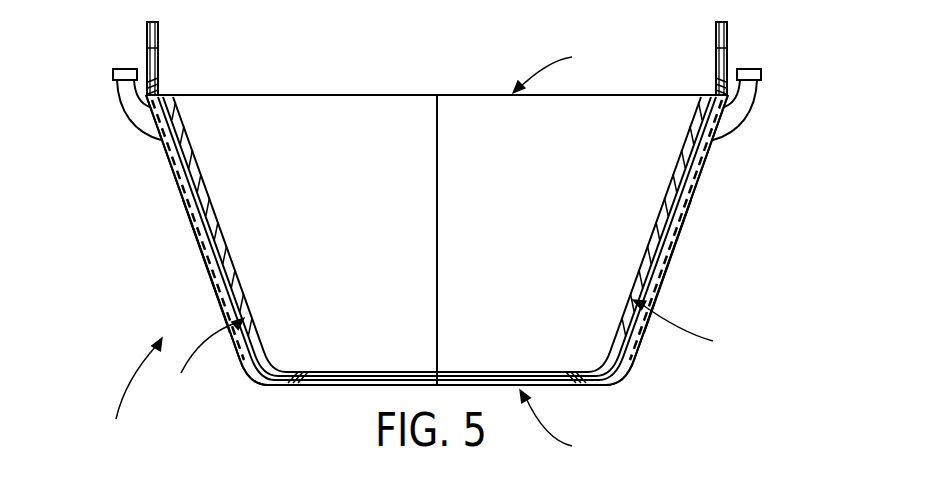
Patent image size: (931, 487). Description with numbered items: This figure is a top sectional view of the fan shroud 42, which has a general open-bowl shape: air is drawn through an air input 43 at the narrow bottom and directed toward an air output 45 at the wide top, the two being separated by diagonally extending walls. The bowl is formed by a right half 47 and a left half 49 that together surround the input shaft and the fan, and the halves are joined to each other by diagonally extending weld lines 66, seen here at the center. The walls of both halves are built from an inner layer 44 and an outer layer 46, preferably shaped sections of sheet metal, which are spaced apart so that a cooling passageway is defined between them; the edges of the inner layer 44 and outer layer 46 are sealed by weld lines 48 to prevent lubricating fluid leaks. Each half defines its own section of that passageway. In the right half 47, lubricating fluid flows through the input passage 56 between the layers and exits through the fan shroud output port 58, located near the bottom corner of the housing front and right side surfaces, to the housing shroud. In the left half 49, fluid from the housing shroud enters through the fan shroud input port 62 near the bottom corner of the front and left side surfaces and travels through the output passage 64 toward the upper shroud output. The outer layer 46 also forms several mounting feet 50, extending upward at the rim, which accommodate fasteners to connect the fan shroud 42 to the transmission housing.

The fan shroud 42 is at (414, 275).
The air input 43 is at (437, 416).
The inner layer 44 is at (208, 193).
The air output 45 is at (437, 69).
The outer layer 46 is at (188, 221).
The right half 47 is at (665, 268).
The weld lines 48 is at (152, 92).
The left half 49 is at (207, 267).
The mounting feet 50 is at (158, 42).
The input passage 56 is at (690, 330).
The fan shroud output port 58 is at (762, 73).
The fan shroud input port 62 is at (113, 73).
The output passage 64 is at (205, 360).
The weld lines 66 is at (437, 215).